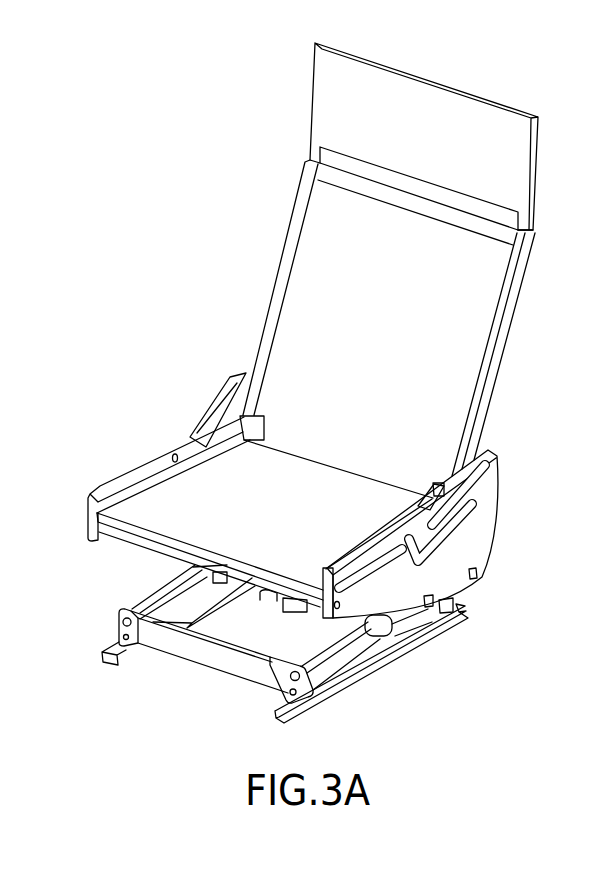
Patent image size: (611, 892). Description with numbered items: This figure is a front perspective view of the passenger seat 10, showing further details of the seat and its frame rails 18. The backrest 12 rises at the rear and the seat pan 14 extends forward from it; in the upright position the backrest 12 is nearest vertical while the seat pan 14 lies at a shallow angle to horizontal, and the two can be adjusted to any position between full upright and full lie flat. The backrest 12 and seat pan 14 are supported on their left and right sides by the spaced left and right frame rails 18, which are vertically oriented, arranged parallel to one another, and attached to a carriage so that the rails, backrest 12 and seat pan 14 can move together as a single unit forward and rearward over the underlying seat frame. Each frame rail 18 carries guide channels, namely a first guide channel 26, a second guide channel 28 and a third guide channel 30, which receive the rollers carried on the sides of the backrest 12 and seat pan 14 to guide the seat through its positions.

The passenger seat 10 is at (517, 58).
The backrest 12 is at (488, 288).
The seat pan 14 is at (192, 483).
The frame rail 18 is at (110, 482).
The first guide channel 26 is at (363, 573).
The second guide channel 28 is at (463, 523).
The third guide channel 30 is at (487, 465).